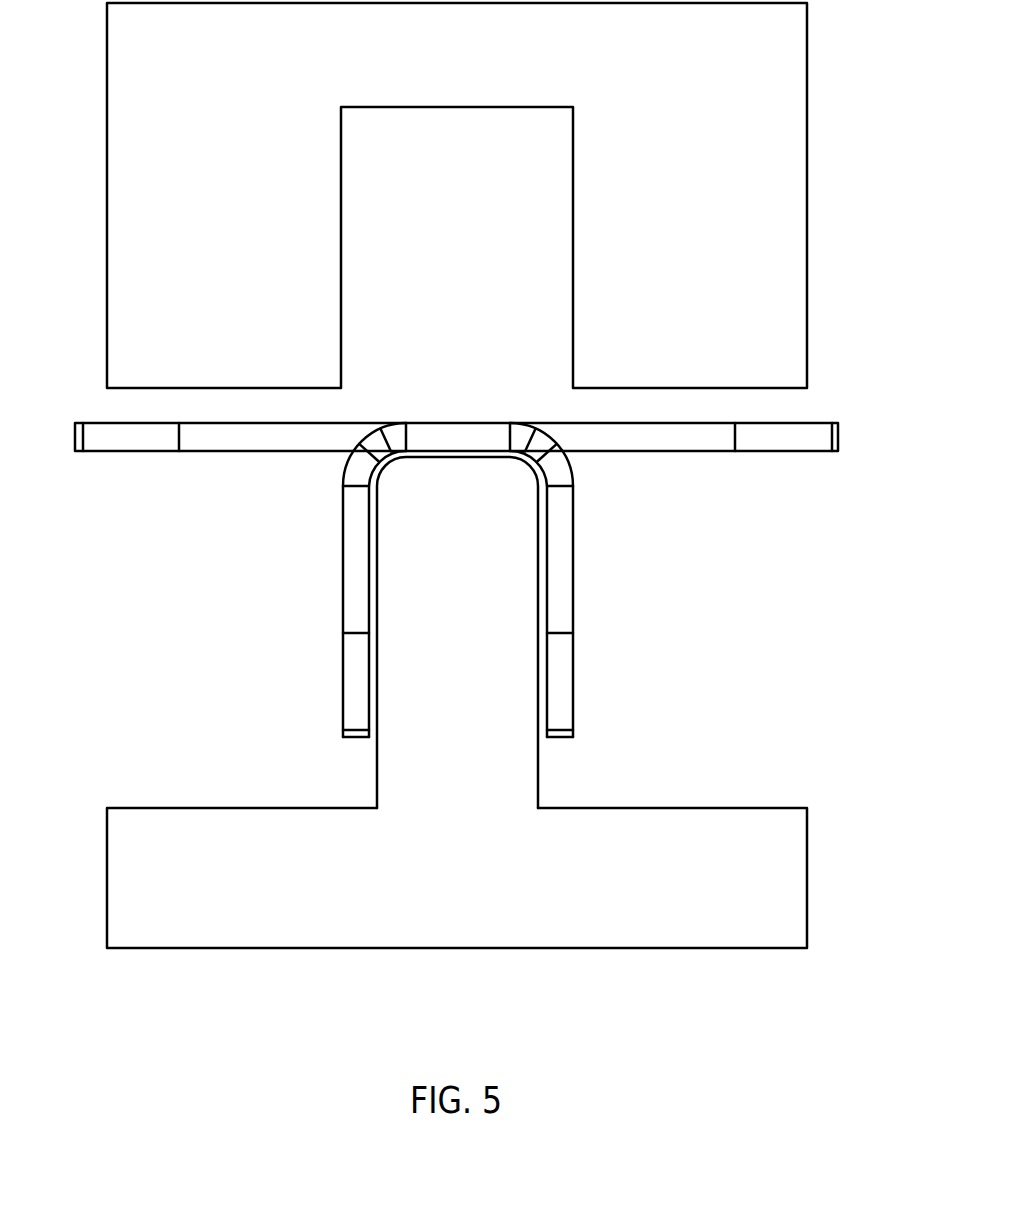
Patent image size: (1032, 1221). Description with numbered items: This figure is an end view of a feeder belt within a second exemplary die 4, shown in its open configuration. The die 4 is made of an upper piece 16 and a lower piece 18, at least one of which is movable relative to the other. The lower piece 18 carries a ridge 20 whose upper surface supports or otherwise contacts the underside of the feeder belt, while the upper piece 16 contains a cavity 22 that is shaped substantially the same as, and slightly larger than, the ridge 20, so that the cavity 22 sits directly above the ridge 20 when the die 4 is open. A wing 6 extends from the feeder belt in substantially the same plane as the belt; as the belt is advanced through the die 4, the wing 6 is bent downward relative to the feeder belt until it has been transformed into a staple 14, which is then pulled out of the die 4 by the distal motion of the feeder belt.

The die 4 is at (158, 550).
The wing 6 is at (838, 438).
The staple 14 is at (573, 552).
The upper piece 16 is at (107, 157).
The lower piece 18 is at (107, 887).
The ridge 20 is at (538, 780).
The cavity 22 is at (522, 195).